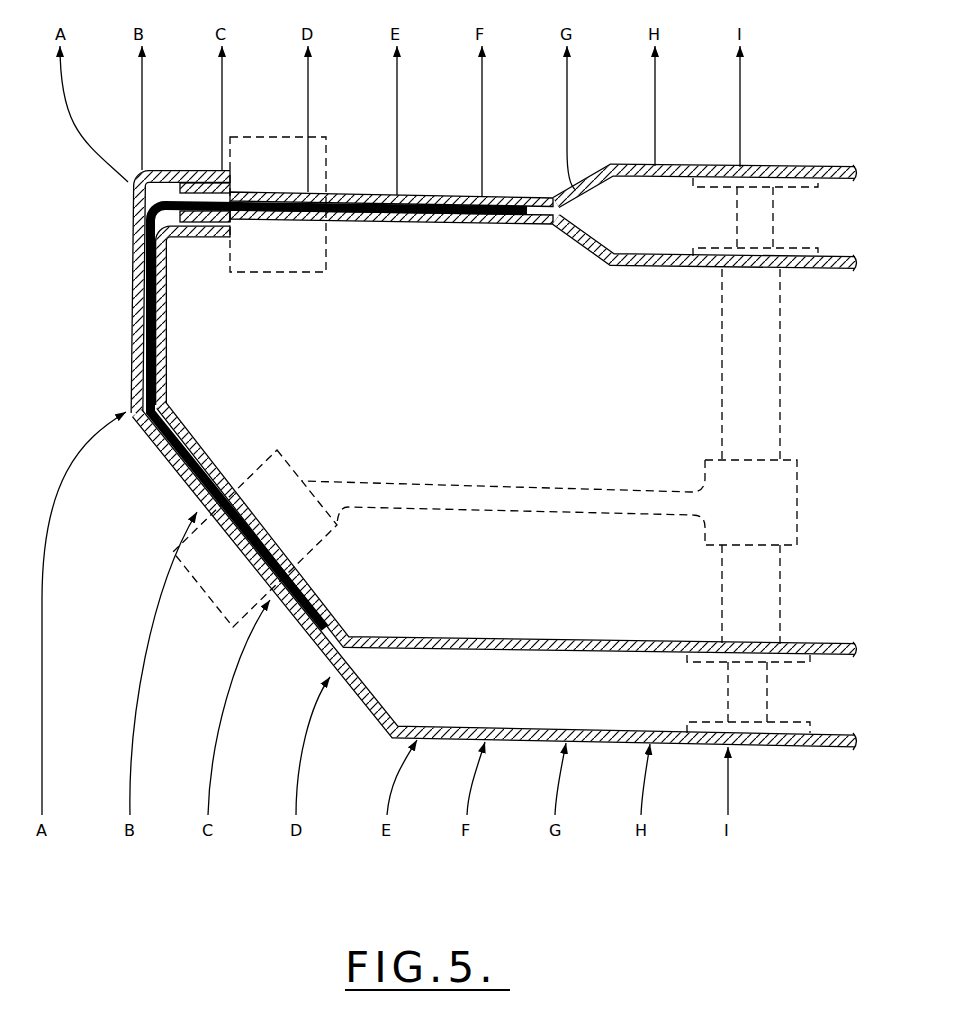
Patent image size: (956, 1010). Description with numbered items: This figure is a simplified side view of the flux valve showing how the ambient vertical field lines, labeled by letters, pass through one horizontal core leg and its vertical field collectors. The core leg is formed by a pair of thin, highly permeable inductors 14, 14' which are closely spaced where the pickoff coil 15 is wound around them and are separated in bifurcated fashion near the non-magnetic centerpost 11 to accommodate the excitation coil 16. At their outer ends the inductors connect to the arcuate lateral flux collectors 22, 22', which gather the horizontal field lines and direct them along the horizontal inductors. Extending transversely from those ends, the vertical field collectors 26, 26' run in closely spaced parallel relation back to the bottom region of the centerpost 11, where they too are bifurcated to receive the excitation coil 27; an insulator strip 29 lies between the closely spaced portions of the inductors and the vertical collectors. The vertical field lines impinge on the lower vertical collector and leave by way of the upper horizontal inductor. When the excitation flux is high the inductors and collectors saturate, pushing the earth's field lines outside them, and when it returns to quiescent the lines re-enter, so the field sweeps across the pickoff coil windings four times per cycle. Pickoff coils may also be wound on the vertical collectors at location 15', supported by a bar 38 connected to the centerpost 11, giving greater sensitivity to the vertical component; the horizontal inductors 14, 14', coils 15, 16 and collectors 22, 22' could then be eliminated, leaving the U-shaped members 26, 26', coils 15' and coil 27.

The centerpost 11 is at (722, 370).
The inductor 14 is at (339, 417).
The inductor 14' is at (391, 187).
The pickoff coil 15 is at (278, 230).
The pickoff coil 15' is at (255, 536).
The excitation coil 16 is at (773, 206).
The flux collector 22 is at (204, 243).
The flux collector 22' is at (197, 160).
The vertical field collector 26 is at (497, 581).
The vertical field collector 26' is at (509, 531).
The excitation coil 27 is at (767, 703).
The insulator strip 29 is at (133, 318).
The bar 38 is at (558, 492).